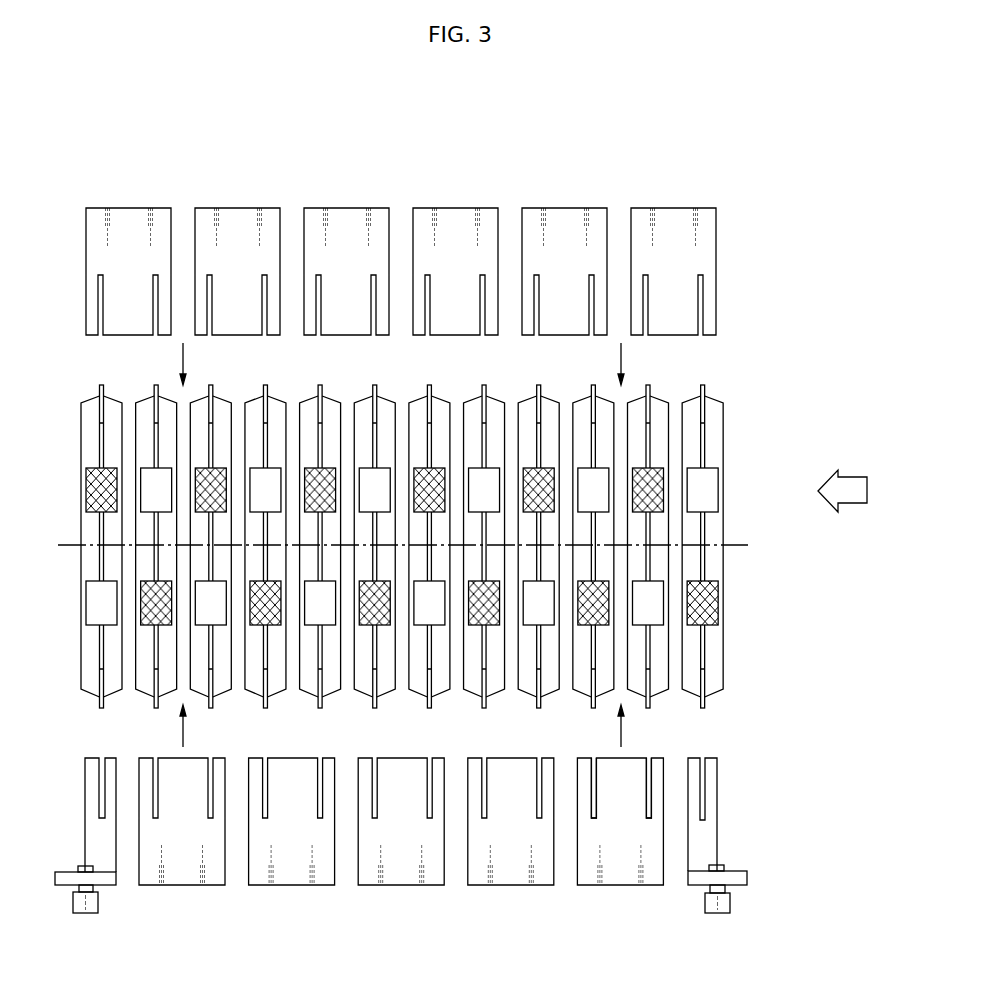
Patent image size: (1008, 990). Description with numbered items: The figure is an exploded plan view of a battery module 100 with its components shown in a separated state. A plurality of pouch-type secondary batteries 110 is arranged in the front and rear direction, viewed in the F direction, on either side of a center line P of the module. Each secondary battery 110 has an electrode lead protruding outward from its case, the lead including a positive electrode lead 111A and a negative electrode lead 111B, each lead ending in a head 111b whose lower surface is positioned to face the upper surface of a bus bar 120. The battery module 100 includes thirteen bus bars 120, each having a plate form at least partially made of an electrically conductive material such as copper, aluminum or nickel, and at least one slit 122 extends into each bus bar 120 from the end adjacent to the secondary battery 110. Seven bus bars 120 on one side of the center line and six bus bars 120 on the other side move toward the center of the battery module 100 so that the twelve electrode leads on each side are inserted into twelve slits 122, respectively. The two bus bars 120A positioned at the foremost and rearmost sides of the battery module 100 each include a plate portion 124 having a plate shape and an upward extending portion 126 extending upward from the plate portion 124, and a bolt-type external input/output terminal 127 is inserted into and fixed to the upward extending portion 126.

The battery module 100 is at (179, 110).
The secondary battery 110 is at (434, 528).
The positive electrode lead 111A is at (718, 500).
The negative electrode lead 111B is at (718, 594).
The head 111b is at (708, 477).
The bus bar 120 is at (511, 886).
The bus bar 120A is at (427, 864).
The slit 122 is at (593, 762).
The plate portion 124 is at (716, 841).
The upward extending portion 126 is at (746, 879).
The external input/output terminal 127 is at (697, 898).